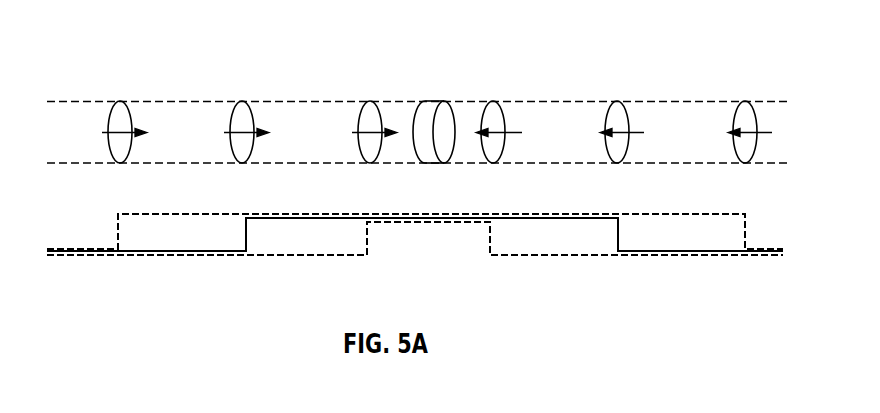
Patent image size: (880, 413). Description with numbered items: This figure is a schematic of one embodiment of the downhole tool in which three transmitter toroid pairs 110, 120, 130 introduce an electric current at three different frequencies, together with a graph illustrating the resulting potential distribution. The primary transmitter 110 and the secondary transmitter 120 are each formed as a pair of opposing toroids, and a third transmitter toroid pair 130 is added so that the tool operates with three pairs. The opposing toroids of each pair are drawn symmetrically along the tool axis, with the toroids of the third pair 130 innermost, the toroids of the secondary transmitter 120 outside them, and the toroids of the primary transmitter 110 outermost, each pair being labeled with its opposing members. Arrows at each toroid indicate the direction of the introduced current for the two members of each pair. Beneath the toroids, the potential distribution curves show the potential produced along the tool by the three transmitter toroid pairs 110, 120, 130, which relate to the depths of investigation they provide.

The primary transmitter 110 is at (113, 55).
The secondary transmitter 120 is at (236, 55).
The third transmitter toroid pair 130 is at (363, 55).